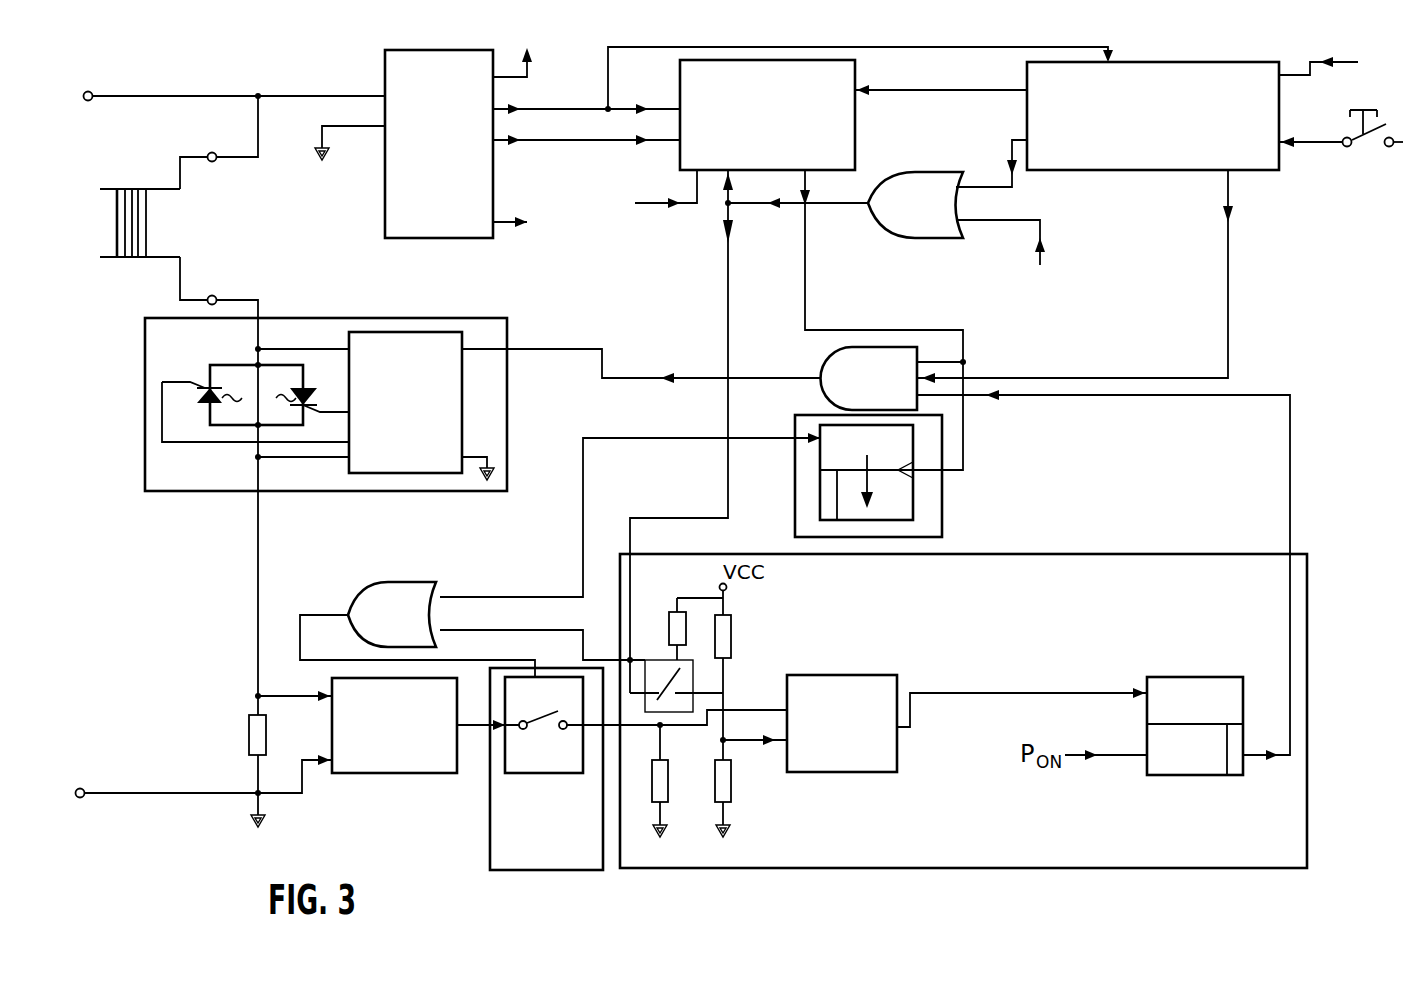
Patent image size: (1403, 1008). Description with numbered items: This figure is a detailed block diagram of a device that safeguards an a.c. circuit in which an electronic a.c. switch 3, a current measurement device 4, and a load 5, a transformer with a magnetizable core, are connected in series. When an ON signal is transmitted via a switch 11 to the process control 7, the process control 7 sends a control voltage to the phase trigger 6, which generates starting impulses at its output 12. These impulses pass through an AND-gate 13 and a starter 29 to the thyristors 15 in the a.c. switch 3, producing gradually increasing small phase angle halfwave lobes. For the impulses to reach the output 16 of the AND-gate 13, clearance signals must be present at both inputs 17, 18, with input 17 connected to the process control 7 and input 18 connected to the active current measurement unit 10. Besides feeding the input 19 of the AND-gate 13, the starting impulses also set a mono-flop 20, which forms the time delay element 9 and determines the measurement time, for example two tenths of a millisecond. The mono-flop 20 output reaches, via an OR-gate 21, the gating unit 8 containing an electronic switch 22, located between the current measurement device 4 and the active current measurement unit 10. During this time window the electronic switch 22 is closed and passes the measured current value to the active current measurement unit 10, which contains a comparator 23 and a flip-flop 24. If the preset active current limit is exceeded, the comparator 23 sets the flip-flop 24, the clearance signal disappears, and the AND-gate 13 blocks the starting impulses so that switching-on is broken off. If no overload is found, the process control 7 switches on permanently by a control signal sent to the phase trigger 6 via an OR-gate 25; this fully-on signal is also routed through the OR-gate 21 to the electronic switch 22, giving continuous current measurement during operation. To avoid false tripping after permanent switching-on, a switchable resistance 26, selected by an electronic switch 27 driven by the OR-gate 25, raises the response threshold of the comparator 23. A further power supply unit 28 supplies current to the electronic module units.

The electronic a.c. switch 3 is at (165, 491).
The current measurement device 4 is at (385, 739).
The load 5 is at (173, 218).
The phase trigger 6 is at (758, 128).
The process control 7 is at (1143, 126).
The gating unit 8 is at (523, 841).
The time delay element 9 is at (942, 520).
The active current measurement unit 10 is at (1172, 554).
The switch 11 is at (1361, 162).
The output 12 is at (808, 181).
The AND-gate 13 is at (857, 393).
The thyristors 15 is at (255, 395).
The output 16 is at (797, 372).
The input 17 is at (1004, 375).
The input 18 is at (1020, 397).
The input 19 is at (933, 358).
The mono-flop 20 is at (830, 455).
The OR-gate 21 is at (383, 628).
The electronic switch 22 is at (553, 762).
The comparator 23 is at (827, 737).
The flip-flop 24 is at (1183, 681).
The OR-gate 25 is at (903, 218).
The switchable resistance 26 is at (675, 612).
The electronic switch 27 is at (651, 660).
The power supply unit 28 is at (424, 142).
The starter 29 is at (390, 410).